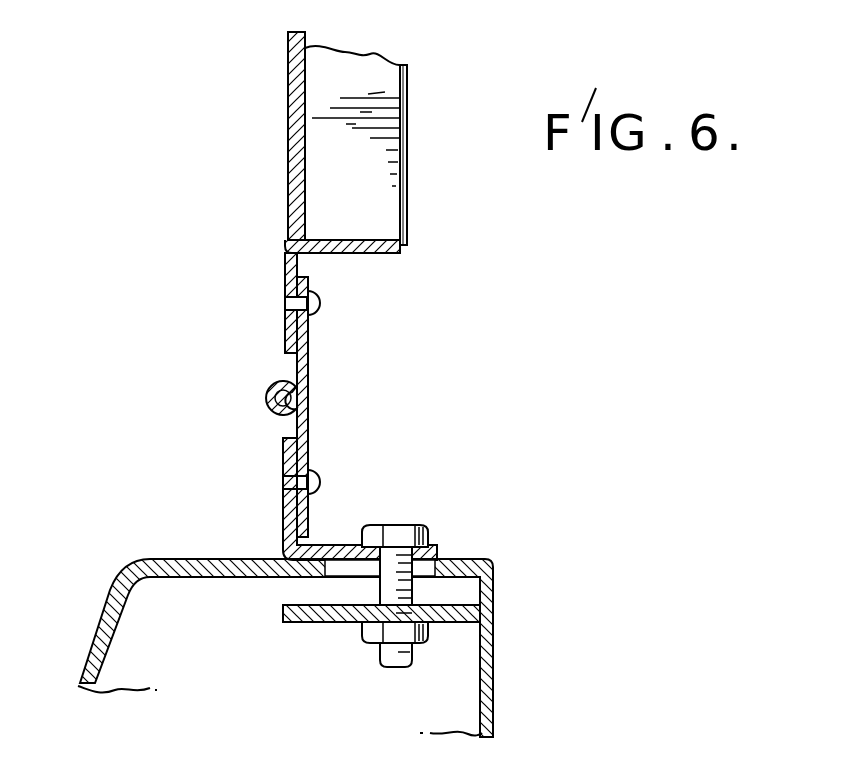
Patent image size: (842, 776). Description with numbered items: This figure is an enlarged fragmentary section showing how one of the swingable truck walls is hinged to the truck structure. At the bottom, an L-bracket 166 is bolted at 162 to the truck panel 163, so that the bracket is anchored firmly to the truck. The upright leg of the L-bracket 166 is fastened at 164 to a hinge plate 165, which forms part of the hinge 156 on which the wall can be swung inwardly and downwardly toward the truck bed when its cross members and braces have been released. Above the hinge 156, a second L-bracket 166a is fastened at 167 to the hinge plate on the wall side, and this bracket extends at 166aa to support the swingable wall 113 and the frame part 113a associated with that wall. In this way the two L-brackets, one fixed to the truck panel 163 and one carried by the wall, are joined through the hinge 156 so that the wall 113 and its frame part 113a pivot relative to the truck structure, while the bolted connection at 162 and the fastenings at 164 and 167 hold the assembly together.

The wall 113 is at (268, 110).
The frame part 113a is at (398, 96).
The L-bracket extension 166aa is at (367, 241).
The L-bracket 166a is at (268, 275).
The fastening 167 is at (320, 302).
The hinge 156 is at (268, 396).
The hinge plate 165 is at (308, 420).
The fastening 164 is at (320, 478).
The bolt 162 is at (405, 527).
The L-bracket 166 is at (270, 528).
The truck panel 163 is at (187, 568).